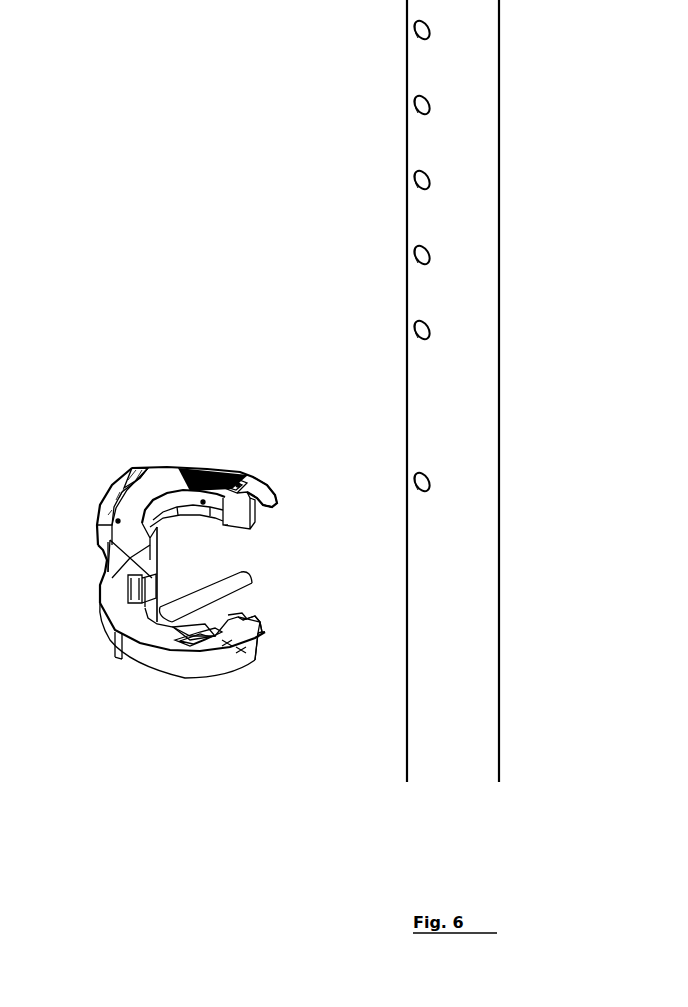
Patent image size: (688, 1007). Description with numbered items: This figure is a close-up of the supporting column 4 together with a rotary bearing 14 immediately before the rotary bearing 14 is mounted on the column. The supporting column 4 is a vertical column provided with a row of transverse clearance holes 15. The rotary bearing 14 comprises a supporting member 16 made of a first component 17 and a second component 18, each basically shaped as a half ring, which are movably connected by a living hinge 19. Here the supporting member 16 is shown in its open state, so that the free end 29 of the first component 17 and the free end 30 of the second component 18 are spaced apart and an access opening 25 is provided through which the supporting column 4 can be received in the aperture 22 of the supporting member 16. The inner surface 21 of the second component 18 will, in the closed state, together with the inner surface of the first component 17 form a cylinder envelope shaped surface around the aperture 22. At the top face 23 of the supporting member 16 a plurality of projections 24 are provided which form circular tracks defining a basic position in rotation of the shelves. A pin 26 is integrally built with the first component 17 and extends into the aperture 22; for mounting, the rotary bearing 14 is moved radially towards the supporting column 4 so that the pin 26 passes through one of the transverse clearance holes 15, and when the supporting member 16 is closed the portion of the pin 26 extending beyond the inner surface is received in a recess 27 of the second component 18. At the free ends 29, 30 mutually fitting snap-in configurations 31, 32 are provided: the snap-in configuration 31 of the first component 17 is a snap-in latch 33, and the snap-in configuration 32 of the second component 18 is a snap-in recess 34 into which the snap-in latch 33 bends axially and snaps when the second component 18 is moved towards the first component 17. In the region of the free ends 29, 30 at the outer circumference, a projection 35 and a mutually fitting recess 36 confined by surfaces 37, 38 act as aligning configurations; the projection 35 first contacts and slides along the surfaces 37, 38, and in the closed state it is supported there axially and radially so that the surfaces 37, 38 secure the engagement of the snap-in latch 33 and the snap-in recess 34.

The supporting column 4 is at (476, 713).
The rotary bearing 14 is at (80, 443).
The transverse clearance holes 15 is at (410, 28).
The supporting member 16 is at (110, 632).
The first component 17 is at (115, 655).
The second component 18 is at (176, 467).
The living hinge 19 is at (106, 563).
The inner surface 21 is at (203, 500).
The aperture 22 is at (202, 564).
The top face 23 is at (116, 520).
The projections 24 is at (128, 468).
The access opening 25 is at (294, 623).
The pin 26 is at (244, 582).
The recess 27 is at (165, 517).
The free end 29 is at (253, 675).
The free end 30 is at (256, 516).
The snap-in configuration 31 is at (307, 658).
The snap-in configuration 32 is at (260, 443).
The snap-in latch 33 is at (266, 631).
The snap-in recess 34 is at (240, 483).
The projection 35 is at (268, 488).
The recess 36 is at (248, 650).
The surface 37 is at (262, 636).
The surface 38 is at (232, 645).